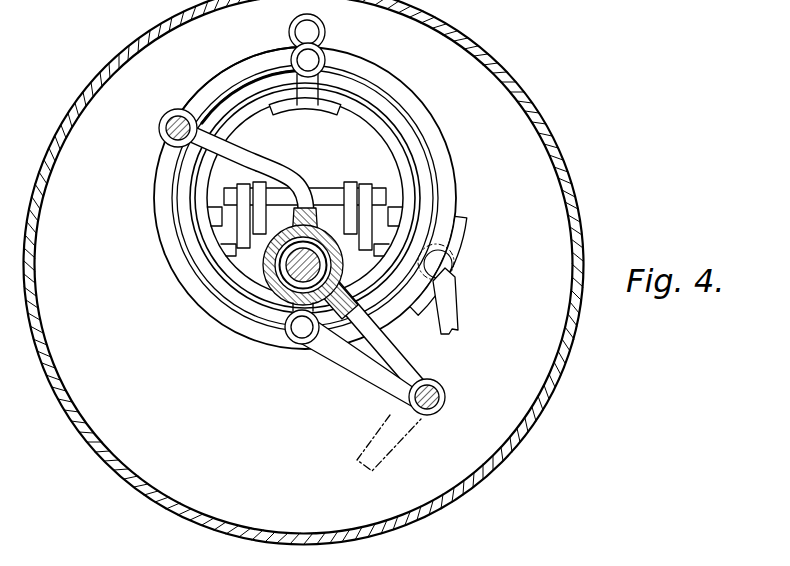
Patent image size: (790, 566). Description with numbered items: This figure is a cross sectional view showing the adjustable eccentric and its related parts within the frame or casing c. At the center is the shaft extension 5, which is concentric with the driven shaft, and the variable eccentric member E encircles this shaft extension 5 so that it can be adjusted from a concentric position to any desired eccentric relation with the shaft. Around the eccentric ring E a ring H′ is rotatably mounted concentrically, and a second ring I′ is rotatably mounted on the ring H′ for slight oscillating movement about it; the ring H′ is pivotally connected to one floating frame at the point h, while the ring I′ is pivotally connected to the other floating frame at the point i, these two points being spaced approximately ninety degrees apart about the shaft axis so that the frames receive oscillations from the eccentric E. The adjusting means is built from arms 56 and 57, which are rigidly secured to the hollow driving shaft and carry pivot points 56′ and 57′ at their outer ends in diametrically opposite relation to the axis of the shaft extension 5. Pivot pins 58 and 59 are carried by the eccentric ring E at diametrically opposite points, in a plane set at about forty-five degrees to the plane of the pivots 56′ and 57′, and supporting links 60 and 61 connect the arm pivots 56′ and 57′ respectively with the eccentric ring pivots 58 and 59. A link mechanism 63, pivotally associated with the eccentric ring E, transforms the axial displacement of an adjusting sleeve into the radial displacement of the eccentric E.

The frame or casing c is at (493, 471).
The second ring I′ is at (389, 75).
The ring H′ is at (410, 125).
The variable eccentric member E is at (389, 133).
The point of connection i is at (442, 270).
The link mechanism 63 is at (362, 197).
The point of connection h is at (310, 31).
The supporting link 61 is at (238, 98).
The arm 56 is at (397, 362).
The supporting link 60 is at (374, 370).
The arm 57 is at (278, 168).
The shaft extension 5 is at (296, 274).
The pivot pin 58 is at (302, 338).
The pivot point 56′ is at (446, 394).
The pivot point 57′ is at (174, 112).
The pivot pin 59 is at (313, 58).